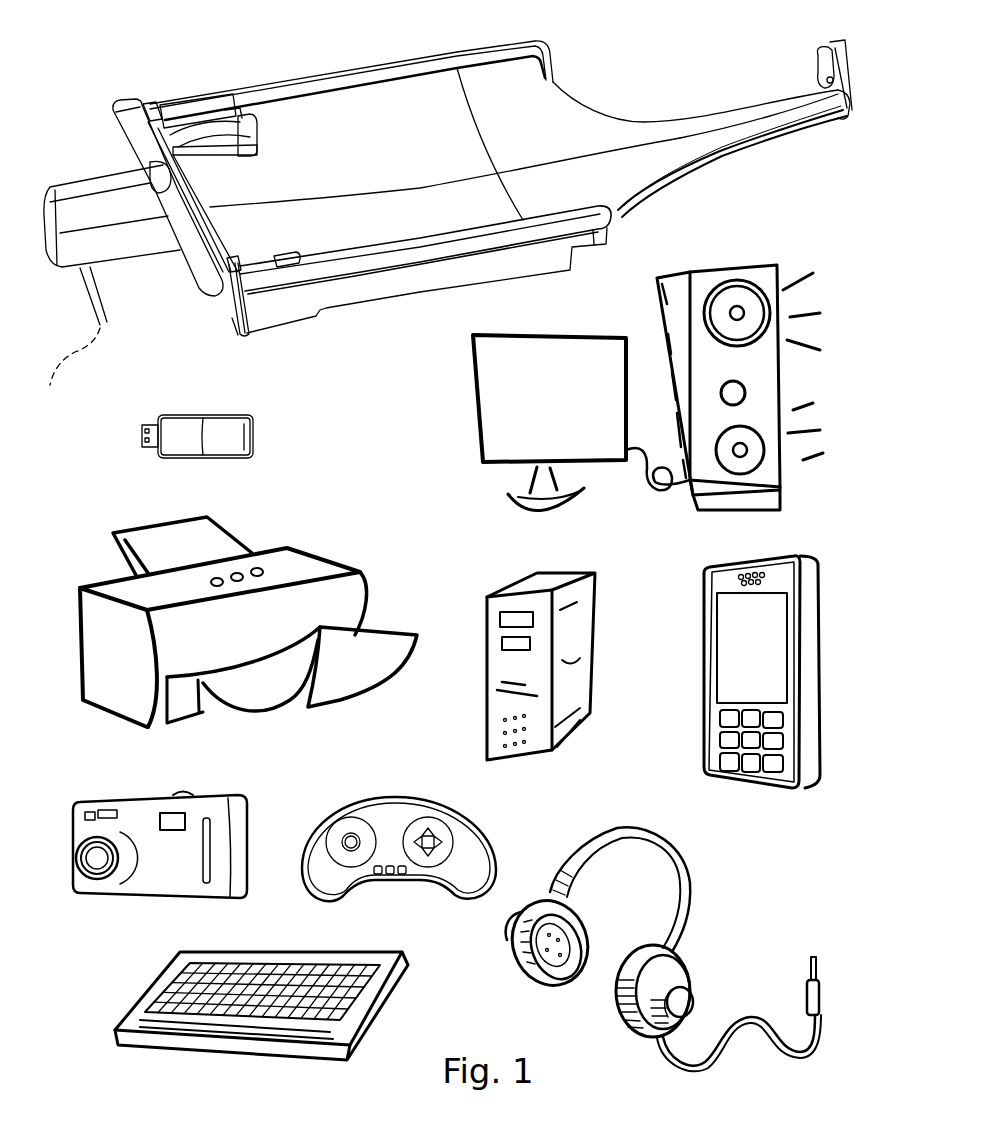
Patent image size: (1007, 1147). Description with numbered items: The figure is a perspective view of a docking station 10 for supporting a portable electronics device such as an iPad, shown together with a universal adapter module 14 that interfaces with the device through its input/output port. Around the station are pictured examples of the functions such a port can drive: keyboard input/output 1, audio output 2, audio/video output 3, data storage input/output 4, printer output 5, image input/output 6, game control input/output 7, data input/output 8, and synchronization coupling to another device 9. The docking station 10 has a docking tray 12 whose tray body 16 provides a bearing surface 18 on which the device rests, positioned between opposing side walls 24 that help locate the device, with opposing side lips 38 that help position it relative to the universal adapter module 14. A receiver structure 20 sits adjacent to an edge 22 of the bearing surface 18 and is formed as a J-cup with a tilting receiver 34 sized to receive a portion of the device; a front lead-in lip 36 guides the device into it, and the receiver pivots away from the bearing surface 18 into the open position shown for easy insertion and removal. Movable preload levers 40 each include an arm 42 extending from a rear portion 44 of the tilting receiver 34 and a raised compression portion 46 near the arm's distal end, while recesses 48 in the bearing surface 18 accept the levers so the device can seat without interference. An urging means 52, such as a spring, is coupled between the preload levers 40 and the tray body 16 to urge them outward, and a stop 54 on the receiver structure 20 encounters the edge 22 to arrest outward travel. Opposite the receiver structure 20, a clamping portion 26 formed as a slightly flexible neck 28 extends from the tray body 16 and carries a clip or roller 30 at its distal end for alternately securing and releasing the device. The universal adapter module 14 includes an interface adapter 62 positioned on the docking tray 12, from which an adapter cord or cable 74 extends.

The docking station 10 is at (567, 92).
The docking tray 12 is at (368, 312).
The universal adapter module 14 is at (100, 251).
The tray body 16 is at (273, 318).
The bearing surface 18 is at (398, 164).
The receiver structure 20 is at (115, 108).
The edge 22 is at (204, 207).
The side walls 24 is at (373, 68).
The clamping portion 26 is at (777, 144).
The flexible neck 28 is at (766, 110).
The clip or roller 30 is at (815, 55).
The tilting receiver 34 is at (163, 245).
The front lead-in lip 36 is at (127, 101).
The side lips 38 is at (149, 102).
The preload levers 40 is at (193, 122).
The arm 42 is at (228, 116).
The rear portion 44 is at (190, 170).
The compression portion 46 is at (215, 125).
The recesses 48 is at (257, 125).
The urging means 52 is at (258, 152).
The stop 54 is at (232, 325).
The interface adapter 62 is at (150, 423).
The adapter cord or cable 74 is at (85, 295).
The keyboard input/output 1 is at (261, 1016).
The audio output 2 is at (661, 949).
The audio/video output 3 is at (648, 399).
The data storage input/output 4 is at (205, 452).
The printer output 5 is at (248, 635).
The image input/output 6 is at (160, 861).
The game control input/output 7 is at (399, 862).
The data input/output 8 is at (541, 682).
The synchronization coupling to another device 9 is at (762, 691).